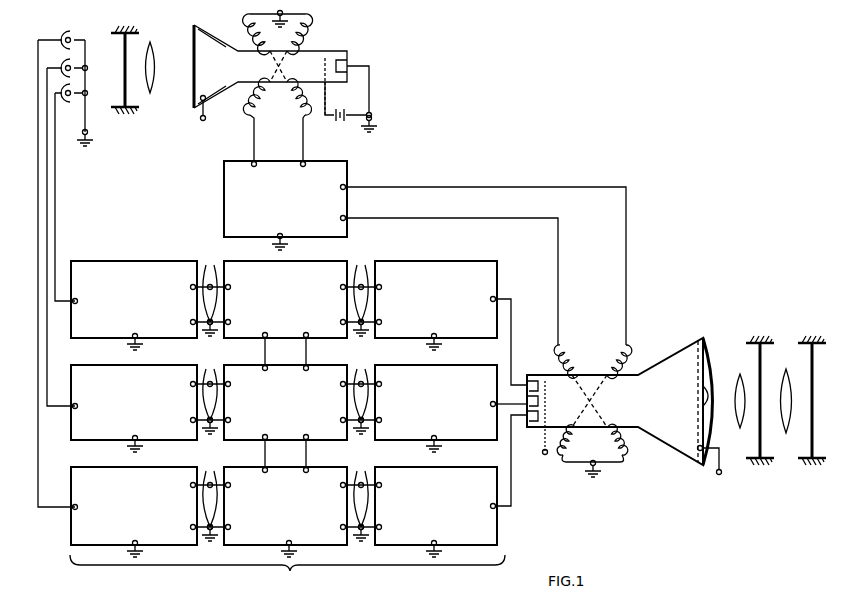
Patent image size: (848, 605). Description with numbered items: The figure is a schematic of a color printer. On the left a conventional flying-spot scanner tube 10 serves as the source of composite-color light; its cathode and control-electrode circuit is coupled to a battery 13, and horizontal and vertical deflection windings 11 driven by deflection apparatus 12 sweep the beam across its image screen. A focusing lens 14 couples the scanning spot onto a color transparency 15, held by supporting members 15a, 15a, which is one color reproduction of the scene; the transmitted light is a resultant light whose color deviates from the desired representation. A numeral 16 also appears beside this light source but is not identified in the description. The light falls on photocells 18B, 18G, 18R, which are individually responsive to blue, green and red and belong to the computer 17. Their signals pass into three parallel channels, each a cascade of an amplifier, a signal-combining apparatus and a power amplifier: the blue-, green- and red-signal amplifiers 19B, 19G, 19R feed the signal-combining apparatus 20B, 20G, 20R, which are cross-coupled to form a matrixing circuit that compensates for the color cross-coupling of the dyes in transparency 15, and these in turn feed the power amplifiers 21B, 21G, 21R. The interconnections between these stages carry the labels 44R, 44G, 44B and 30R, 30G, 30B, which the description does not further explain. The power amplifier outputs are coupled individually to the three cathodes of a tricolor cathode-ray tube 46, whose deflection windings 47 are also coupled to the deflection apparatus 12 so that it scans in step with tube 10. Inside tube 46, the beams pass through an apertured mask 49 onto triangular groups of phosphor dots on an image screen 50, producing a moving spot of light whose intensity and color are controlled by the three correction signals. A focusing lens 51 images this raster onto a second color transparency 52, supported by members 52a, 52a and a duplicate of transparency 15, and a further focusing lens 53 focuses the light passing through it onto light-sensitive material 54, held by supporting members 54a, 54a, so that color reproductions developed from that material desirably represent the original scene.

The flying-spot scanner tube 10 is at (236, 86).
The horizontal and vertical deflection windings 11 is at (287, 114).
The deflection apparatus 12 is at (224, 189).
The battery 13 is at (348, 120).
The focusing lens 14 is at (157, 70).
The color transparency 15 is at (128, 98).
The supporting members 15a is at (128, 29).
The display unit 16 is at (194, 163).
The computer 17 is at (298, 588).
The photocell 18B is at (66, 31).
The photocell 18G is at (76, 60).
The photocell 18R is at (76, 86).
The red-signal amplifier 19R is at (146, 262).
The green-signal amplifier 19G is at (146, 366).
The blue-signal amplifier 19B is at (146, 468).
The red cable 44R is at (207, 287).
The green cable 44G is at (207, 389).
The blue cable 44B is at (207, 495).
The signal-combining apparatus 20R is at (342, 261).
The signal-combining apparatus 20G is at (296, 366).
The signal-combining apparatus 20B is at (296, 468).
The red output cable 30R is at (363, 287).
The green output cable 30G is at (363, 389).
The blue output cable 30B is at (362, 494).
The power amplifier 21R is at (473, 261).
The power amplifier 21G is at (486, 364).
The power amplifier 21B is at (446, 464).
The tricolor cathode-ray tube 46 is at (672, 356).
The deflection windings 47 is at (603, 452).
The apertured mask 49 is at (697, 372).
The image screen 50 is at (702, 398).
The focusing lens 51 is at (736, 379).
The color transparency 52 is at (763, 377).
The supporting members 52a is at (748, 336).
The further focusing lens 53 is at (793, 425).
The light-sensitive material 54 is at (811, 388).
The supporting members 54a is at (800, 337).